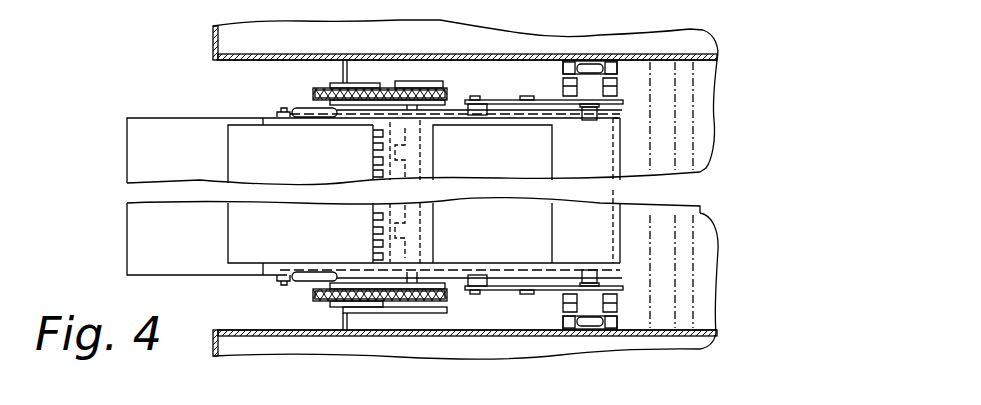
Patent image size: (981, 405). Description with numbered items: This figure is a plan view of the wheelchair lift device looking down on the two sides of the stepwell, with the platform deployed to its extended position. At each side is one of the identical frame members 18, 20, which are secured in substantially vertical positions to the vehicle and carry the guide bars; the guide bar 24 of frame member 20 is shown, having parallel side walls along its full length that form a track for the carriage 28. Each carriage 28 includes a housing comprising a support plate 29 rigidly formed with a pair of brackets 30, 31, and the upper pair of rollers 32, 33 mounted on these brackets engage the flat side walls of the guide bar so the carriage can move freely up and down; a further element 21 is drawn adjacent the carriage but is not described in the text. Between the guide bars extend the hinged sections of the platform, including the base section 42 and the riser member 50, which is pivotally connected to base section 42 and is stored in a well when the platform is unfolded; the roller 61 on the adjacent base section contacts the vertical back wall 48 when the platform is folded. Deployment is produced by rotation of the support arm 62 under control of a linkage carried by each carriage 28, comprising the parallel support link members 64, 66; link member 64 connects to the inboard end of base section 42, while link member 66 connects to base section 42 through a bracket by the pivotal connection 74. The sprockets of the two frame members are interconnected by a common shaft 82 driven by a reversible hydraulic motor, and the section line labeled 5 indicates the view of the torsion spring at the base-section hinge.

The section line 5- 5 is at (457, 228).
The frame member 18 is at (634, 62).
The frame member 20 is at (644, 323).
The stop block 21 is at (594, 112).
The guide bar 24 is at (613, 300).
The carriage 28 is at (510, 99).
The support plate 29 is at (527, 100).
The bracket 30 is at (563, 296).
The bracket 31 is at (618, 92).
The upper roller 32 is at (567, 63).
The upper roller 33 is at (613, 65).
The base section 42 is at (162, 125).
The back wall 48 is at (445, 130).
The riser member 50 is at (243, 137).
The roller 61 is at (628, 190).
The support arm 62 is at (343, 105).
The support link member 64 is at (530, 113).
The support link member 66 is at (357, 110).
The pivotal connection 74 is at (283, 110).
The common shaft 82 is at (430, 157).